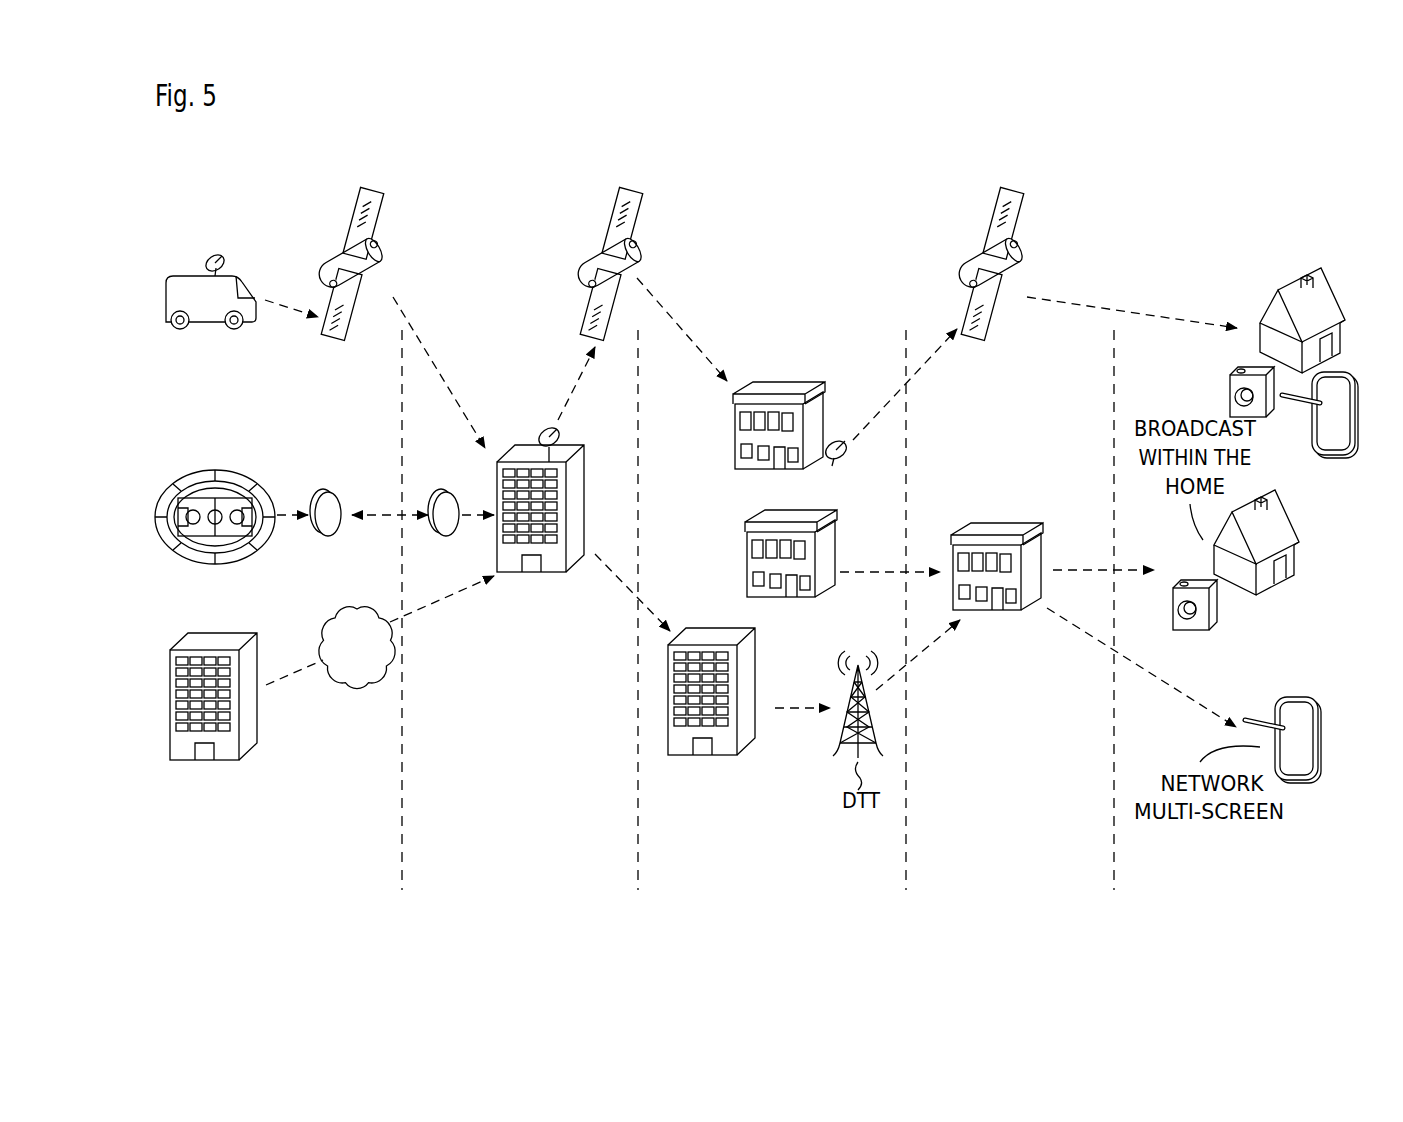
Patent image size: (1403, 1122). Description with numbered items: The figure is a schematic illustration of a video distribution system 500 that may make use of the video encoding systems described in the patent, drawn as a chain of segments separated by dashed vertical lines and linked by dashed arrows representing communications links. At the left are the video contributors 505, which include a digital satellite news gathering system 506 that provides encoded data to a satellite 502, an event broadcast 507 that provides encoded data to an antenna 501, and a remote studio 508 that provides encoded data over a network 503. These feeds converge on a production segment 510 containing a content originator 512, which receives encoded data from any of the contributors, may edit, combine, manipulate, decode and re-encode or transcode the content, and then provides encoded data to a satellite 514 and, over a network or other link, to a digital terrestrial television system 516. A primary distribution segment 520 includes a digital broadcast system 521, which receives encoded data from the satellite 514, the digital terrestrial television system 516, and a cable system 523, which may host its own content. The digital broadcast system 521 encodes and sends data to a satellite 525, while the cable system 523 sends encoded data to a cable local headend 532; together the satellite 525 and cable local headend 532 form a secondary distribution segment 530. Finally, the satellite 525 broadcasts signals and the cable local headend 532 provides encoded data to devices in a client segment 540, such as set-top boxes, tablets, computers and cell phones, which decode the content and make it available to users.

The video distribution system 500 is at (1179, 190).
The antenna 501 is at (337, 492).
The satellite 502 is at (381, 200).
The network 503 is at (376, 674).
The video contributors 505 is at (290, 890).
The digital satellite news gathering system 506 is at (208, 251).
The event broadcast 507 is at (214, 472).
The remote studio 508 is at (226, 772).
The production segment 510 is at (527, 890).
The content originator 512 is at (520, 446).
The satellite 514 is at (638, 204).
The digital terrestrial television system 516 is at (713, 642).
The primary distribution segment 520 is at (762, 890).
The digital broadcast system 521 is at (822, 390).
The cable system 523 is at (832, 557).
The satellite 525 is at (1018, 203).
The secondary distribution segment 530 is at (997, 890).
The cable local headend 532 is at (1027, 533).
The client segment 540 is at (1234, 890).